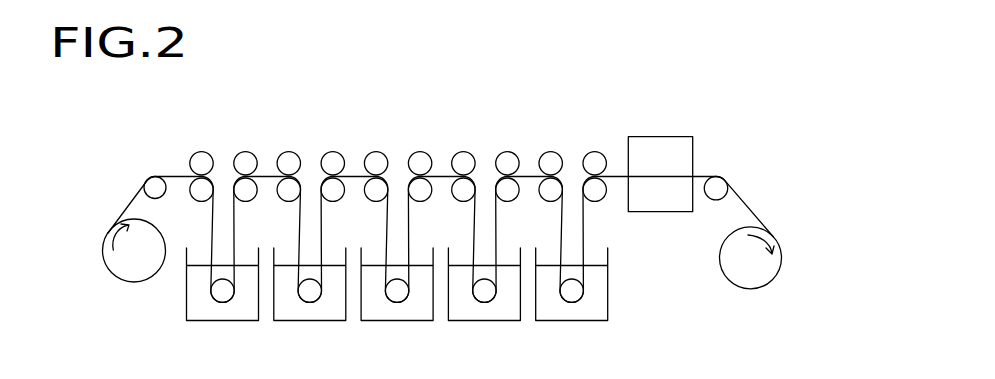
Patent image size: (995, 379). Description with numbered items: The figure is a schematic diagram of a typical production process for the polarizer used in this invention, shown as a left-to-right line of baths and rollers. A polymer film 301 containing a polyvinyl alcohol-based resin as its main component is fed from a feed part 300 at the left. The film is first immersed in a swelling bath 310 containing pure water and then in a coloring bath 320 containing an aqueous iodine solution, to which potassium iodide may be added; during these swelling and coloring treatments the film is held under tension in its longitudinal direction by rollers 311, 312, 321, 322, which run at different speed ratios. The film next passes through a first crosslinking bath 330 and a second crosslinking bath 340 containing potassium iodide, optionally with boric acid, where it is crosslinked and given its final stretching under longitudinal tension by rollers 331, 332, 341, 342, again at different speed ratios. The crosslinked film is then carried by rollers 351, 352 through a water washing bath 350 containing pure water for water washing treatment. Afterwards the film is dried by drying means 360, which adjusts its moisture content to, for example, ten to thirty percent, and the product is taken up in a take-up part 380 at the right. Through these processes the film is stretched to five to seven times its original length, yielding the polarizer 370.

The feed part 300 is at (118, 262).
The polymer film 301 is at (128, 197).
The swelling bath 310 is at (222, 313).
The roller 311 is at (202, 160).
The roller 312 is at (246, 160).
The coloring bath 320 is at (317, 313).
The roller 321 is at (290, 160).
The roller 322 is at (334, 160).
The first crosslinking bath 330 is at (398, 313).
The roller 331 is at (377, 160).
The roller 332 is at (421, 160).
The second crosslinking bath 340 is at (485, 313).
The roller 341 is at (464, 160).
The roller 342 is at (508, 160).
The water washing bath 350 is at (573, 313).
The roller 351 is at (552, 160).
The roller 352 is at (596, 160).
The drying means 360 is at (658, 152).
The polarizer 370 is at (747, 198).
The take-up part 380 is at (765, 273).